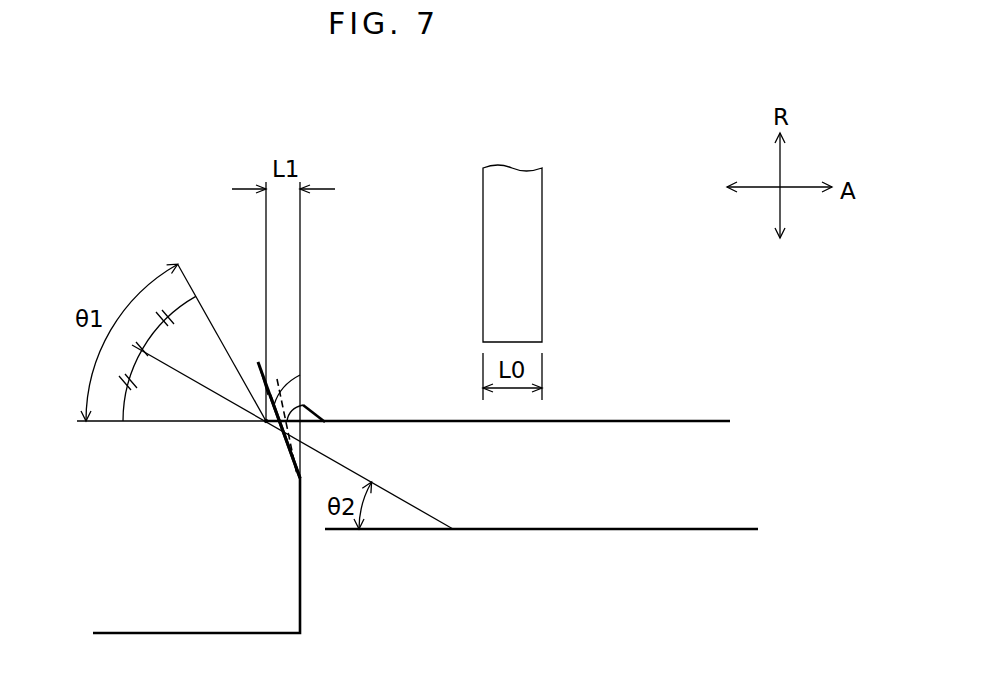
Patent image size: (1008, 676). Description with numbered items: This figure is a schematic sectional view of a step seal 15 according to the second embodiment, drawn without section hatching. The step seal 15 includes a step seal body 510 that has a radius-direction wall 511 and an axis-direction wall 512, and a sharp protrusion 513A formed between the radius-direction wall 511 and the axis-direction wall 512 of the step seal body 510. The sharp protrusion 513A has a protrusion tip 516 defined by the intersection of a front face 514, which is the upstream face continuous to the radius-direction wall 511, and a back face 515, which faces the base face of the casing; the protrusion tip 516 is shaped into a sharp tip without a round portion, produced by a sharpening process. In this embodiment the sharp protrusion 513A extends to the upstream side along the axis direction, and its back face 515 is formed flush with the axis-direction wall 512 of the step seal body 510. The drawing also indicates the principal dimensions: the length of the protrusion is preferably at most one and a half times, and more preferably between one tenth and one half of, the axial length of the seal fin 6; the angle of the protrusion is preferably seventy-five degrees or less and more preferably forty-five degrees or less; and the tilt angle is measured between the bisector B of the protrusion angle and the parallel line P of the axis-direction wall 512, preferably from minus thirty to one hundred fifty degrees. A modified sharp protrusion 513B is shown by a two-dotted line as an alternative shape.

The seal fin 6 is at (542, 245).
The step seal 15 is at (625, 188).
The step seal body 510 is at (698, 484).
The radius-direction wall 511 is at (300, 558).
The axis-direction wall 512 is at (690, 420).
The sharp protrusion 513A is at (257, 452).
The sharp protrusion 513B is at (277, 379).
The front face 514 is at (279, 452).
The back face 515 is at (303, 405).
The protrusion tip 516 is at (260, 424).
The bisector B is at (400, 498).
The parallel line P is at (718, 533).